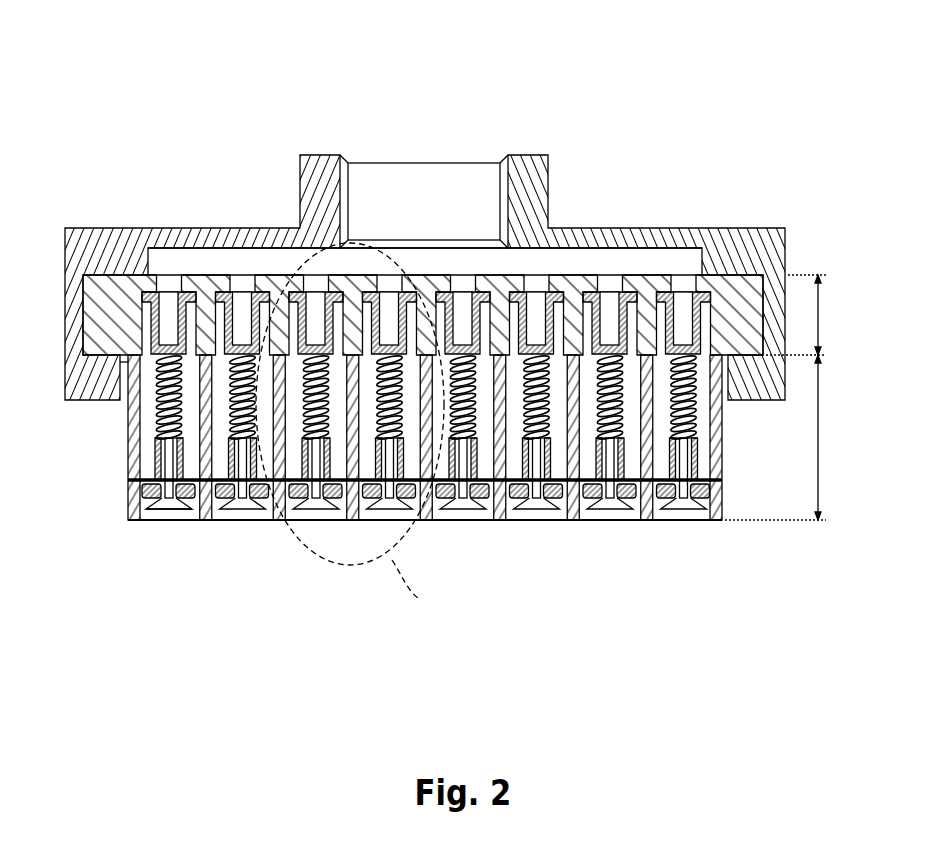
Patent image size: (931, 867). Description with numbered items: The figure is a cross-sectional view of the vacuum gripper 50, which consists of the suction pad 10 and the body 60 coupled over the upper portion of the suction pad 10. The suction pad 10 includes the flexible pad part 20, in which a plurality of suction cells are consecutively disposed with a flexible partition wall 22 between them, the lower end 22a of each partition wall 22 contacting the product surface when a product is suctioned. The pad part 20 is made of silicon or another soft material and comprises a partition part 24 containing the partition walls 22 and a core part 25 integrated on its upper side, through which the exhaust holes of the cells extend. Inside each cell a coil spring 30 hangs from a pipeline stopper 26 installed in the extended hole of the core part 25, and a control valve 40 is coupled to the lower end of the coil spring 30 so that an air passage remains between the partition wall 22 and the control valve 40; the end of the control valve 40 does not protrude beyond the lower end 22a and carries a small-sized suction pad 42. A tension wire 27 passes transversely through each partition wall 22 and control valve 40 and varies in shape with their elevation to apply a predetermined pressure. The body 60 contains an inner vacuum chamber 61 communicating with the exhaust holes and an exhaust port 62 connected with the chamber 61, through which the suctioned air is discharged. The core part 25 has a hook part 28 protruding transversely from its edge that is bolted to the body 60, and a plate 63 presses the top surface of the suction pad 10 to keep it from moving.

The gripper 50 is at (213, 95).
The body 60 is at (98, 218).
The vacuum chamber 61 is at (425, 258).
The exhaust port 62 is at (497, 195).
The plate 63 is at (572, 275).
The hook part 28 is at (100, 320).
The suction pad 10 is at (113, 381).
The pad part 20 is at (857, 313).
The core part 25 is at (809, 315).
The partition part 24 is at (788, 437).
The coil spring 30 is at (703, 412).
The tension wire 27 is at (705, 479).
The pipeline stopper 26 is at (622, 275).
The partition wall 22 is at (185, 403).
The lower end of the partition wall 22a is at (188, 514).
The control valve 40 is at (160, 447).
The small-sized suction pad 42 is at (150, 492).